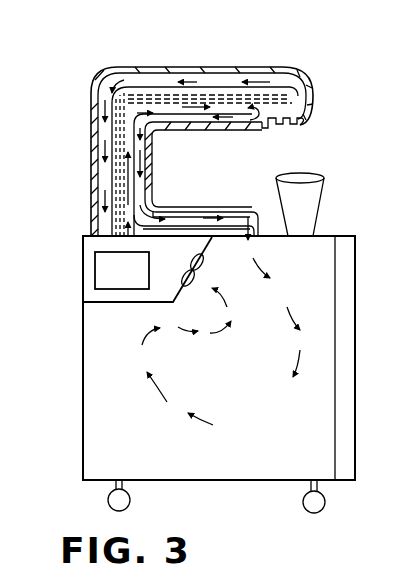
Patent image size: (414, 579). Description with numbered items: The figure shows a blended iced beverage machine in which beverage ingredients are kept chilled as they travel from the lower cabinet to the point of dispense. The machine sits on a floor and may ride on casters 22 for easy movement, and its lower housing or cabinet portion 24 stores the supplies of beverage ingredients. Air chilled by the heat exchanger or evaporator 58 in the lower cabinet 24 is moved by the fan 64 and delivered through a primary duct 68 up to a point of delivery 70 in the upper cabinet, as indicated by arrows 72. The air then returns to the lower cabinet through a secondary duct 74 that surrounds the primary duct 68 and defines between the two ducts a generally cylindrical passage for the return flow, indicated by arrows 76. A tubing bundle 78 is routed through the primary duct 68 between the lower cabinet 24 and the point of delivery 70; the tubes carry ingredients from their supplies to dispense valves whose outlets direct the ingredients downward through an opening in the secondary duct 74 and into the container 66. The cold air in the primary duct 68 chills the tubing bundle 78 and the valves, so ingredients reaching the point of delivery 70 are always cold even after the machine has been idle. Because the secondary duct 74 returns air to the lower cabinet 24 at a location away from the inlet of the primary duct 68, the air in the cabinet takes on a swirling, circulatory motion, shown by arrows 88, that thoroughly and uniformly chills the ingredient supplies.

The casters 22 is at (131, 503).
The lower housing or cabinet portion 24 is at (100, 412).
The heat exchanger or evaporator 58 is at (110, 268).
The fan 64 is at (203, 267).
The container 66 is at (306, 208).
The primary duct 68 is at (92, 128).
The point of delivery 70 is at (272, 125).
The arrows 72 is at (135, 155).
The secondary duct 74 is at (112, 72).
The arrows 76 is at (105, 170).
The tubing bundle 78 is at (128, 213).
The arrows 88 is at (253, 417).